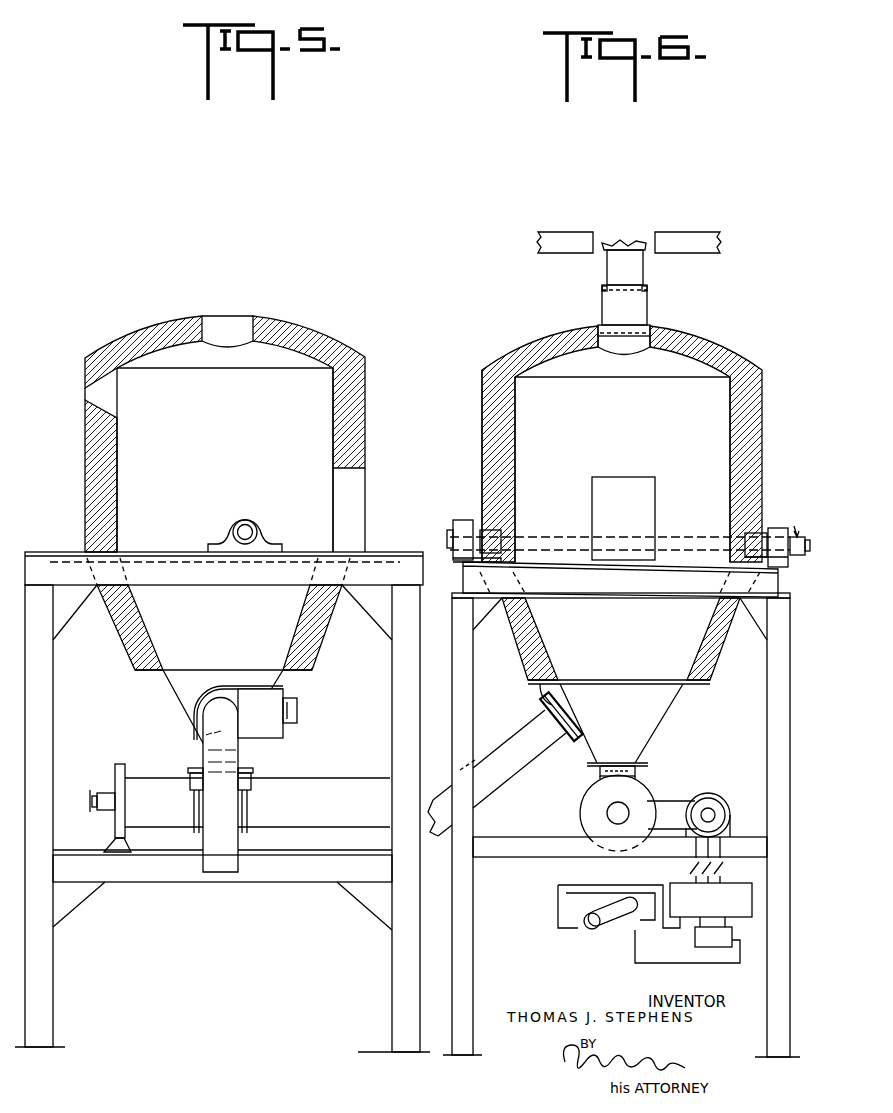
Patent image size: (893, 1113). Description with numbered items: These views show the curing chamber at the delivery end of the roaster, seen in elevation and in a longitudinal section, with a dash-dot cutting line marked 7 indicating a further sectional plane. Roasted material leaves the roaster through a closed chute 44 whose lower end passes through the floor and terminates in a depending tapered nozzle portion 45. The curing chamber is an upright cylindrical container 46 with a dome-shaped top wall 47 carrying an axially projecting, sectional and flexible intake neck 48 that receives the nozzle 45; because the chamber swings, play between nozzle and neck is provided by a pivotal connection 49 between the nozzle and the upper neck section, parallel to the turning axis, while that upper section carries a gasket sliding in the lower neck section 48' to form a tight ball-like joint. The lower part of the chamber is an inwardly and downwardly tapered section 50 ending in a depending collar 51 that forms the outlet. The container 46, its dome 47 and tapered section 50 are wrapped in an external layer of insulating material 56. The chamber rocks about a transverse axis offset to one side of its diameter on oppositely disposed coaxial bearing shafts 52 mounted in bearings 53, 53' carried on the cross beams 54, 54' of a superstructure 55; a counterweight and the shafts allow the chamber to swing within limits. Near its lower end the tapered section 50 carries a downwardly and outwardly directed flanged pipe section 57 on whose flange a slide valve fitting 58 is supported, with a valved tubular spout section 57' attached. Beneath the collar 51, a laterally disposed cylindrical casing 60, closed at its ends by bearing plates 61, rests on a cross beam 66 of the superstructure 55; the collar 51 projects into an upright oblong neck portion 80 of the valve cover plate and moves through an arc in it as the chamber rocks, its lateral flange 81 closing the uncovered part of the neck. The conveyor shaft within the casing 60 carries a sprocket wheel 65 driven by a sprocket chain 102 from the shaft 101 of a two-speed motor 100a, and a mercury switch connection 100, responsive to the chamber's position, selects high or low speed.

In FIG. 5, the section line 7- 7 is at (224, 552).
In FIG. 6, the closed chute 44 is at (629, 244).
In FIG. 6, the depending tapered nozzle portion 45 is at (641, 267).
In FIG. 5, the upright cylindrical container 46 is at (122, 495).
In FIG. 6, the upright cylindrical container 46 is at (522, 477).
In FIG. 5, the dome-shaped top wall 47 is at (290, 357).
In FIG. 6, the dome-shaped top wall 47 is at (688, 370).
In FIG. 6, the sectional and flexible intake neck 48 is at (604, 304).
In FIG. 6, the coupling sleeve 48' is at (646, 318).
In FIG. 6, the pivotal connection 49 is at (605, 290).
In FIG. 5, the tapered section 50 is at (167, 622).
In FIG. 6, the tapered section 50 is at (665, 702).
In FIG. 6, the depending collar 51 is at (598, 767).
In FIG. 5, the bearing shafts 52 is at (245, 545).
In FIG. 6, the bearing shafts 52 is at (702, 540).
In FIG. 5, the bearings 53 is at (240, 528).
In FIG. 6, the bearings 53 is at (611, 528).
In FIG. 6, the bearing 53' is at (759, 573).
In FIG. 5, the cross beams 54 is at (224, 557).
In FIG. 6, the frame beam 54' is at (621, 590).
In FIG. 5, the superstructure 55 is at (392, 705).
In FIG. 5, the insulating material 56 is at (90, 447).
In FIG. 6, the insulating material 56 is at (481, 400).
In FIG. 6, the flanged pipe section 57 is at (497, 769).
In FIG. 5, the valved tubular spout section 57' is at (239, 779).
In FIG. 6, the valved tubular spout section 57' is at (490, 805).
In FIG. 5, the slide valve fitting 58 is at (300, 706).
In FIG. 6, the slide valve fitting 58 is at (575, 712).
In FIG. 5, the cylindrical casing 60 is at (328, 786).
In FIG. 6, the cylindrical casing 60 is at (580, 822).
In FIG. 5, the bearing plates 61 is at (119, 764).
In FIG. 6, the bearing plates 61 is at (645, 798).
In FIG. 5, the sprocket wheel 65 is at (97, 810).
In FIG. 6, the sprocket wheel 65 is at (608, 808).
In FIG. 5, the cross beam 66 is at (138, 868).
In FIG. 6, the cross beam 66 is at (545, 847).
In FIG. 6, the upright oblong neck portion 80 is at (598, 778).
In FIG. 6, the lateral flange 81 is at (640, 770).
In FIG. 6, the mercury switch connection 100 is at (803, 558).
In FIG. 6, the two-speed motor 100a is at (711, 794).
In FIG. 6, the shaft 101 is at (714, 810).
In FIG. 6, the sprocket chain 102 is at (668, 807).